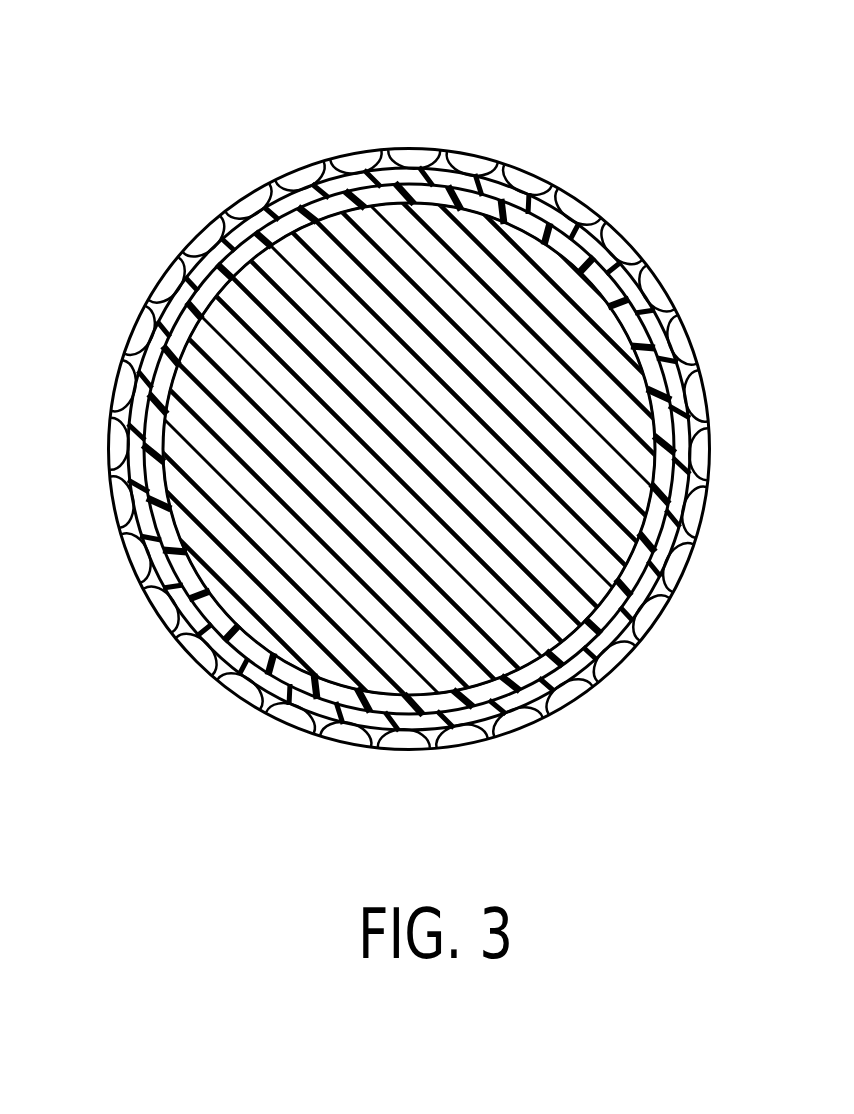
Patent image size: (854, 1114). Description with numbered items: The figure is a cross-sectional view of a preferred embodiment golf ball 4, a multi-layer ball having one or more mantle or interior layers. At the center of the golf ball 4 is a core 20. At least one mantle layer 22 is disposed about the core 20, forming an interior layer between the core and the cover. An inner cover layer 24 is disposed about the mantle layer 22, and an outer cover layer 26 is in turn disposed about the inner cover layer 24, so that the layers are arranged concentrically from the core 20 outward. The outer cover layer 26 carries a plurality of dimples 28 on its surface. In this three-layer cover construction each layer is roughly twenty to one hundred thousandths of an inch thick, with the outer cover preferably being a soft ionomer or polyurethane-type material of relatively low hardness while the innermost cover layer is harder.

The golf ball 4 is at (581, 103).
The core 20 is at (560, 593).
The mantle layer 22 is at (567, 250).
The inner cover layer 24 is at (228, 247).
The outer cover layer 26 is at (700, 430).
The dimples 28 is at (143, 327).